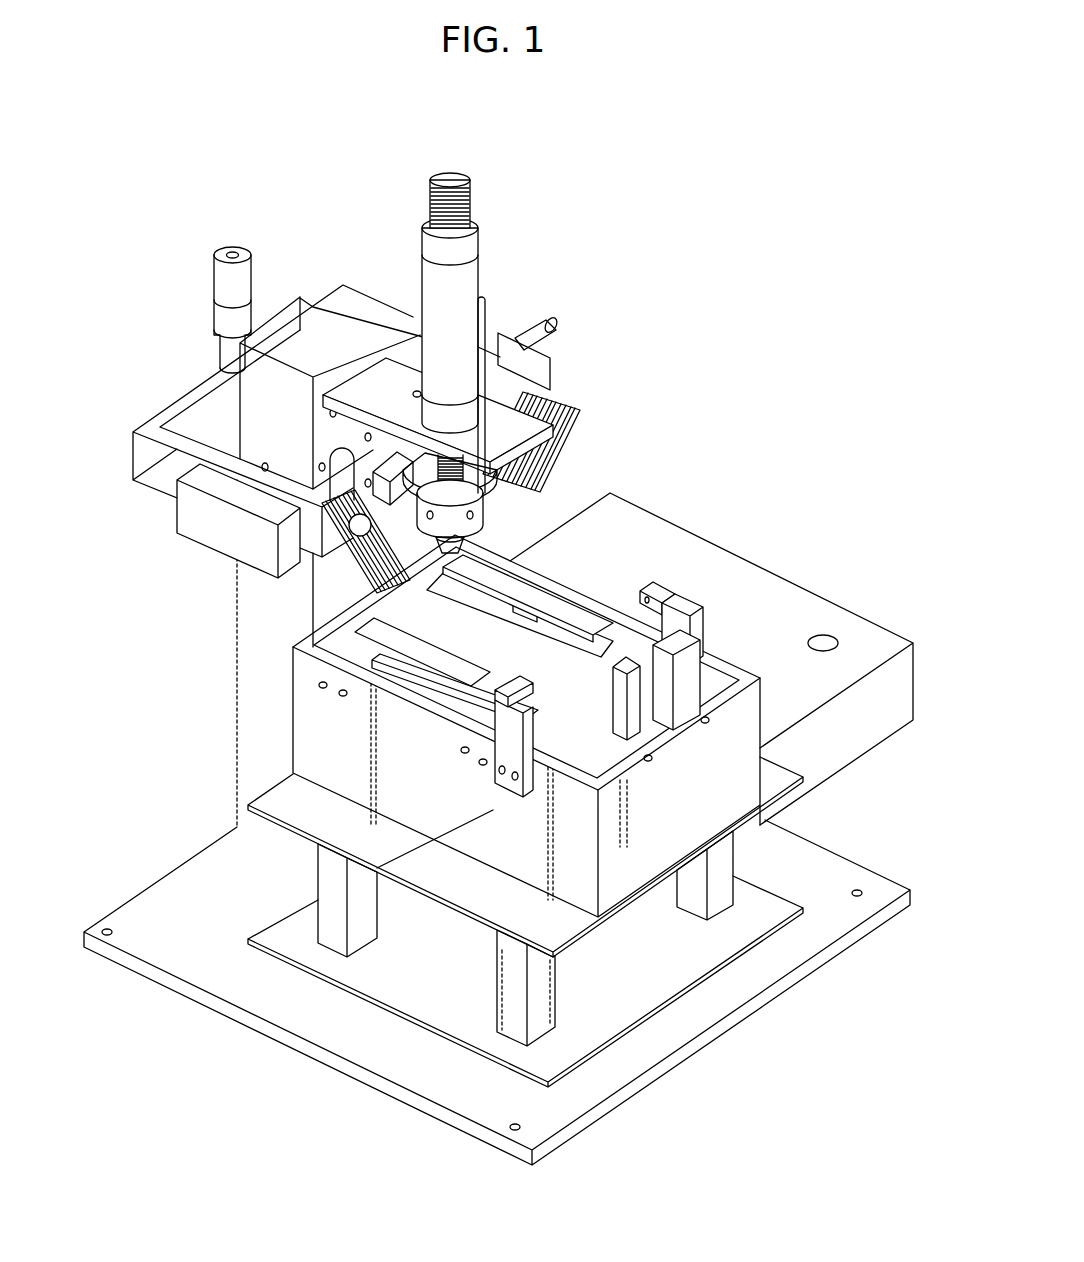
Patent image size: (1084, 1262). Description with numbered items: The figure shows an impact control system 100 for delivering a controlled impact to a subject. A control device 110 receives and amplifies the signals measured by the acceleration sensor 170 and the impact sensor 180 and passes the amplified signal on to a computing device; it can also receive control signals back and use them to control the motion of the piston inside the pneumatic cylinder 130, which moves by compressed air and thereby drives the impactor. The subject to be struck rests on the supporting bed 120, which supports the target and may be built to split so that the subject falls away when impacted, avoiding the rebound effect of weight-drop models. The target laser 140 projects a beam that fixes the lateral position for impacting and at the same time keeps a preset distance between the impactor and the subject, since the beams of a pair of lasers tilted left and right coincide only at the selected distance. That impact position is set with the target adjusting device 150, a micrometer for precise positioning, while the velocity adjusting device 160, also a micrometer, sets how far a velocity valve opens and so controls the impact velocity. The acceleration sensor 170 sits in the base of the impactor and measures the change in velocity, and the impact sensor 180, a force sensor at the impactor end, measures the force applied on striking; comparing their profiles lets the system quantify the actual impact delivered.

The impact control system 100 is at (603, 175).
The control device 110 is at (873, 637).
The supporting bed 120 is at (598, 590).
The pneumatic cylinder 130 is at (430, 261).
The target laser 140 is at (580, 413).
The target adjusting device 150 is at (237, 250).
The velocity adjusting device 160 is at (546, 321).
The acceleration sensor 170 is at (247, 510).
The impact sensor 180 is at (489, 540).